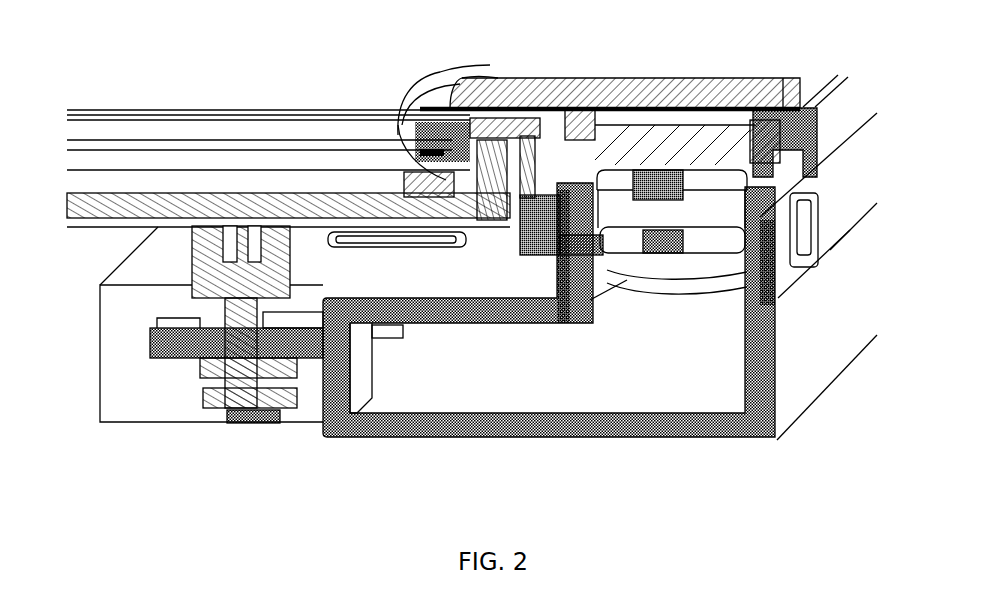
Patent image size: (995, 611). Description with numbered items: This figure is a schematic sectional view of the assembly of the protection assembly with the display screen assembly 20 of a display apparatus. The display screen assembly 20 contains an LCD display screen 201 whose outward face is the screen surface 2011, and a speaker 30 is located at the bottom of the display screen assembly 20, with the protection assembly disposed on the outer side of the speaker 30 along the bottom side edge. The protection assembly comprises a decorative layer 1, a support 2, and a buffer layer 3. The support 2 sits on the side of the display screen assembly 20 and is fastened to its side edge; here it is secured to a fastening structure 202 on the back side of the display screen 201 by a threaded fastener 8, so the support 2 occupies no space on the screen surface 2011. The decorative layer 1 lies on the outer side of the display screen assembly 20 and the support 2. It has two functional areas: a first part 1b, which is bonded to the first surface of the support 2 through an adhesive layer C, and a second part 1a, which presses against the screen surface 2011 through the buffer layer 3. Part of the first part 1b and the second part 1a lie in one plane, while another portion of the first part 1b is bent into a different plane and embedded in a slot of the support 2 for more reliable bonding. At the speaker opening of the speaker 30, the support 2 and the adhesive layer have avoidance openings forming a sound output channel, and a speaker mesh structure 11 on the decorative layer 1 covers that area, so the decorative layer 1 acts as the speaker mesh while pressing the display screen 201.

The decorative layer 1 is at (598, 89).
The second part 1a is at (465, 76).
The first part 1b is at (775, 82).
The support 2 is at (481, 72).
The buffer layer 3 is at (410, 100).
The threaded fastener 8 is at (522, 238).
The speaker mesh structure 11 is at (560, 77).
The adhesive layer C is at (585, 76).
The display screen assembly 20 is at (288, 121).
The display screen 201 is at (268, 94).
The screen surface 2011 is at (220, 108).
The fastening structure 202 is at (318, 248).
The speaker 30 is at (605, 440).